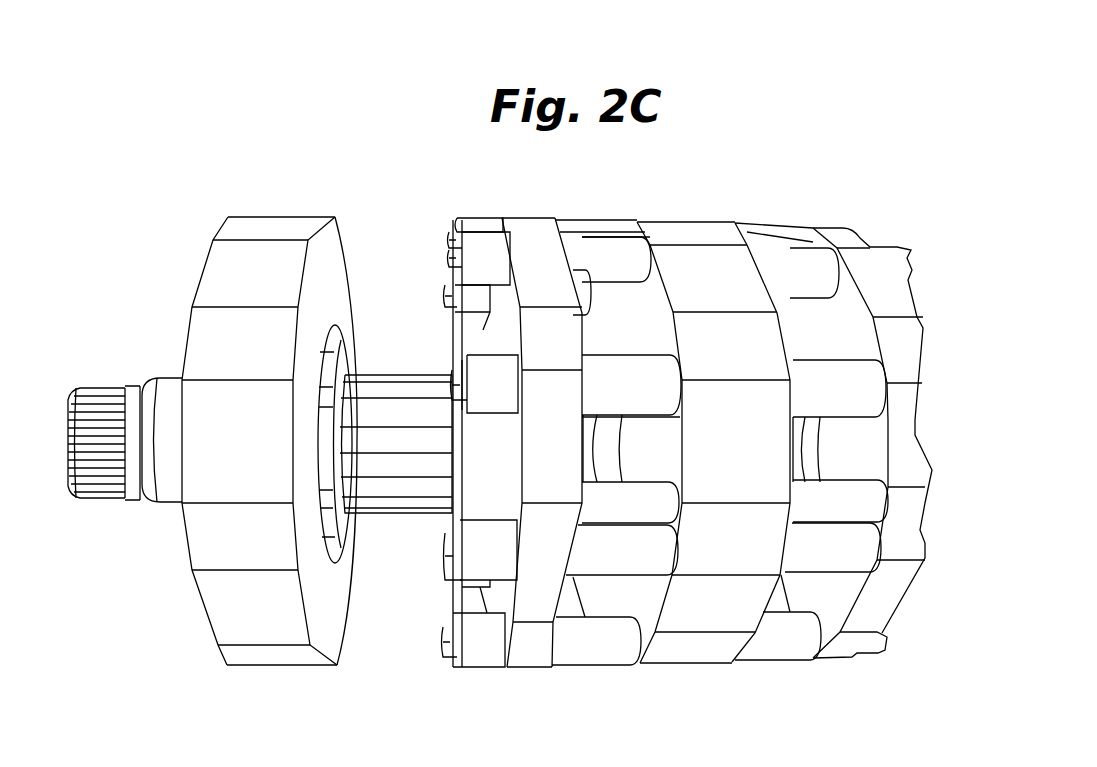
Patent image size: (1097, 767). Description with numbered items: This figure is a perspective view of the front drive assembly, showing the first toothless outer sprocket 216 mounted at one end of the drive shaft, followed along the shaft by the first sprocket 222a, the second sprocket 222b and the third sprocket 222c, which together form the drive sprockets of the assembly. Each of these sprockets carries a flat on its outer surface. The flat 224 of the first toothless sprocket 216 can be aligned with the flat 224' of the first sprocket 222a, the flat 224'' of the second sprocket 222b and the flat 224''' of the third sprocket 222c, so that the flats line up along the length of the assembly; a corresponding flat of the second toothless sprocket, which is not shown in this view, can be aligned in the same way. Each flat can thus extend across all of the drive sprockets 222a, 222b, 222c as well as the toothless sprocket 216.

The first toothless outer sprocket 216 is at (270, 667).
The flat 224 is at (269, 423).
The flat 224' is at (531, 426).
The flat 224'' is at (712, 422).
The flat 224''' is at (858, 419).
The first sprocket 222a is at (528, 665).
The second sprocket 222b is at (693, 665).
The third sprocket 222c is at (842, 660).